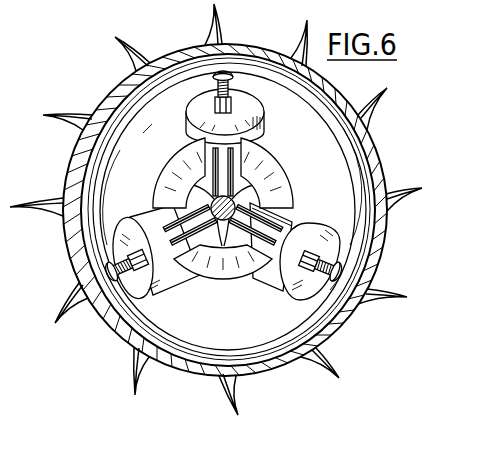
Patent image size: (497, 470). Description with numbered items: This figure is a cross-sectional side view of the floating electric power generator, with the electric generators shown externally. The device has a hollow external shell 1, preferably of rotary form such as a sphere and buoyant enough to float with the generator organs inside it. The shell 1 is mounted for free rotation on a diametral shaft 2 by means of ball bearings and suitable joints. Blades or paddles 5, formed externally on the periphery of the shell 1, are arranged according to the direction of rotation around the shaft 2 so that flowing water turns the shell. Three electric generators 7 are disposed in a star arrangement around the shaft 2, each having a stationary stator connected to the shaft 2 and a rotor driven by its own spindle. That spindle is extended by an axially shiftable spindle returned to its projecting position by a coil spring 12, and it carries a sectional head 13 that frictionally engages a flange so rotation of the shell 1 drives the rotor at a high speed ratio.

The external shell 1 is at (372, 156).
The diametral shaft 2 is at (268, 172).
The blades or paddles 5 is at (300, 50).
The electric generators 7 is at (263, 136).
The coil spring 12 is at (190, 62).
The sectional head 13 is at (211, 82).